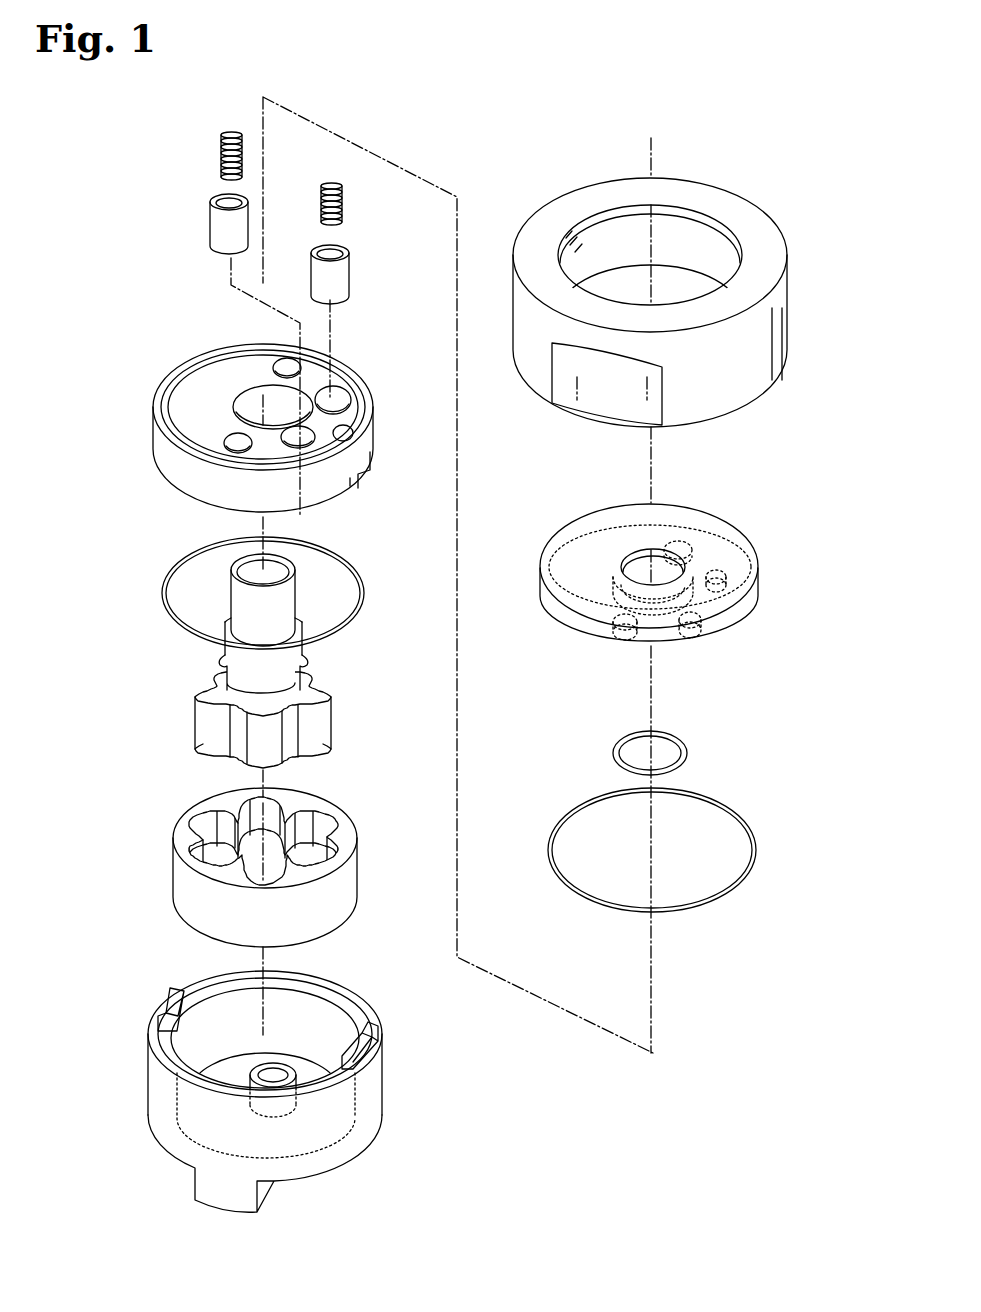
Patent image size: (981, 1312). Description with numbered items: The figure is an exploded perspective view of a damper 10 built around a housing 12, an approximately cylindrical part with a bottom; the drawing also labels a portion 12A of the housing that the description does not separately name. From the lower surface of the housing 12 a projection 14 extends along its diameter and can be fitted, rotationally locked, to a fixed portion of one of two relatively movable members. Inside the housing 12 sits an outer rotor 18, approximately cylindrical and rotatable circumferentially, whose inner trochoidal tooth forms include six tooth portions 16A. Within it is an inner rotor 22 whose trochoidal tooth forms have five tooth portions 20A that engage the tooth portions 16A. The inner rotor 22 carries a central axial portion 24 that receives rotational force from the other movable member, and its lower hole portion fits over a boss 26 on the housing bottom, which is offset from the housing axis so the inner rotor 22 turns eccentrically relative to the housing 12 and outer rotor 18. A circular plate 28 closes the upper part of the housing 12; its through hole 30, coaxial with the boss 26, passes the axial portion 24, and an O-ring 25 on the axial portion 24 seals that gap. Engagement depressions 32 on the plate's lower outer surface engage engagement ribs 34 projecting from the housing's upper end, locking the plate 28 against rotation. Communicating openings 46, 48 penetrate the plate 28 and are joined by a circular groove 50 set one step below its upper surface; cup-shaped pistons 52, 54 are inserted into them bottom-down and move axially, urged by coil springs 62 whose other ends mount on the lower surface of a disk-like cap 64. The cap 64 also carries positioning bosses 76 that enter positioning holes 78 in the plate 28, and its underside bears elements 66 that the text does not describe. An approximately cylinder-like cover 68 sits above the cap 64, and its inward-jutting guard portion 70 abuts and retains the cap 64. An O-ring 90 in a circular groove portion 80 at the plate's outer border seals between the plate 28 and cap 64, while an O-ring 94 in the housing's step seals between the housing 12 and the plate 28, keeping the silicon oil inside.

The damper 10 is at (752, 110).
The housing 12 is at (278, 1075).
The housing rim 12A is at (328, 984).
The projection 14 is at (207, 1190).
The tooth portions 16A is at (320, 818).
The outer rotor 18 is at (304, 857).
The tooth portions 20A is at (270, 748).
The inner rotor 22 is at (321, 661).
The axial portion 24 is at (292, 598).
The O-ring 25 is at (689, 750).
The boss 26 is at (277, 1070).
The plate 28 is at (265, 416).
The through hole 30 is at (238, 396).
The engagement depressions 32 is at (353, 486).
The engagement ribs 34 is at (168, 993).
The communicating opening 46 is at (344, 390).
The communicating opening 48 is at (300, 447).
The circular groove 50 is at (362, 433).
The piston 52 is at (350, 275).
The piston 54 is at (210, 227).
The coil springs 62 is at (220, 156).
The cap 64 is at (641, 585).
The hole 66 is at (718, 592).
The cover 68 is at (646, 282).
The guard portion 70 is at (690, 212).
The positioning bosses 76 is at (686, 547).
The positioning holes 78 is at (282, 362).
The groove portion 80 is at (157, 413).
The O-ring 90 is at (698, 897).
The O-ring 94 is at (165, 597).